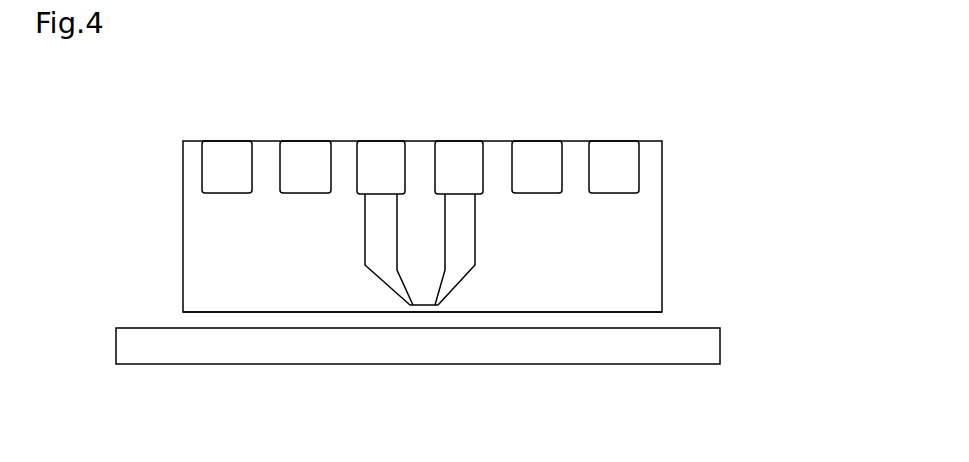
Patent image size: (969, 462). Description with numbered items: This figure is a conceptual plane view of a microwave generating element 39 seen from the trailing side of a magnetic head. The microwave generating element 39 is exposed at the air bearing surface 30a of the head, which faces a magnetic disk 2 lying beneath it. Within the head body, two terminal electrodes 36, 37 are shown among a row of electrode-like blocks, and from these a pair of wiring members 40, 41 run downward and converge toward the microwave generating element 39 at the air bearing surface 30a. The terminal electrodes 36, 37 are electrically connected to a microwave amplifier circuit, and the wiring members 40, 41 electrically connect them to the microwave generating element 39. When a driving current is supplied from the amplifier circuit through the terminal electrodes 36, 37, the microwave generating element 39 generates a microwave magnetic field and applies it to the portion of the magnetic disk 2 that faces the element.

The terminal electrode 36 is at (383, 155).
The terminal electrode 37 is at (460, 157).
The wiring member 40 is at (376, 236).
The wiring member 41 is at (467, 228).
The microwave generating element 39 is at (420, 305).
The air bearing surface 30a is at (675, 310).
The magnetic disk 2 is at (705, 345).